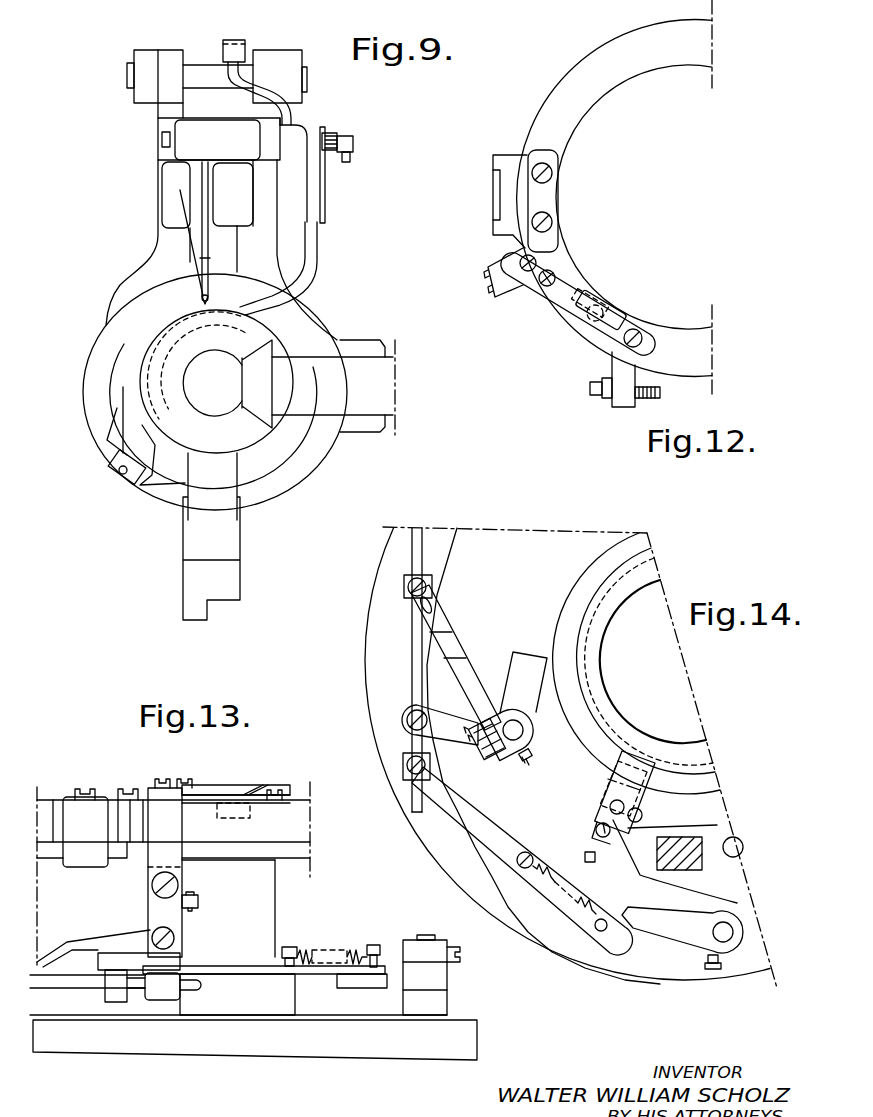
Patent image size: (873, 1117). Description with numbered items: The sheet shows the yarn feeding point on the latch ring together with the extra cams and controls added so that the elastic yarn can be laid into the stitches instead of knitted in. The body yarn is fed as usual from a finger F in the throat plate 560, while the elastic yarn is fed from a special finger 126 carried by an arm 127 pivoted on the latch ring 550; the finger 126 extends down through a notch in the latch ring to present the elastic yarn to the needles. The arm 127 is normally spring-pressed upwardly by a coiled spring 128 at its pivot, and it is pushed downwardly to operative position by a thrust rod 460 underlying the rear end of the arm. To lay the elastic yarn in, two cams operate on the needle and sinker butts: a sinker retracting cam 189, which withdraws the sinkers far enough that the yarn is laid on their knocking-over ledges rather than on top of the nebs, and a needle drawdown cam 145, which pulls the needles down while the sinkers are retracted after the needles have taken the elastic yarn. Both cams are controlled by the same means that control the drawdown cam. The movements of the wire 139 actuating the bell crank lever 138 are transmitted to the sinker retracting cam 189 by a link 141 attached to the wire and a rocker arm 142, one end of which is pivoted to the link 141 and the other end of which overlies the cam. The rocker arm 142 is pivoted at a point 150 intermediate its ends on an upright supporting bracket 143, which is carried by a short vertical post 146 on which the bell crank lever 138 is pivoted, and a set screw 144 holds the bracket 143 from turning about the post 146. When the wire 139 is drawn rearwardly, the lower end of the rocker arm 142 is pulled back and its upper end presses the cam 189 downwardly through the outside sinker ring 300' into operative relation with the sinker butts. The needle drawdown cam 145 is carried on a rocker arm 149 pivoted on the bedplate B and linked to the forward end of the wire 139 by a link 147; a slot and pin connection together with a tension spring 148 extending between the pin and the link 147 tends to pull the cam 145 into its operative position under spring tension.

In FIG. 9, the elastic yarn finger 126 is at (110, 470).
In FIG. 9, the arm 127 is at (313, 264).
In FIG. 9, the coiled spring 128 is at (325, 197).
In FIG. 14, the bell crank lever 138 is at (520, 670).
In FIG. 13, the bell crank lever 138 is at (123, 963).
In FIG. 14, the wire 139 is at (420, 643).
In FIG. 13, the wire 139 is at (83, 980).
In FIG. 14, the link 141 is at (443, 643).
In FIG. 13, the link 141 is at (78, 945).
In FIG. 12, the rocker arm 142 is at (572, 301).
In FIG. 14, the rocker arm 142 is at (487, 756).
In FIG. 13, the rocker arm 142 is at (165, 822).
In FIG. 14, the upright supporting bracket 143 is at (510, 748).
In FIG. 14, the set screw 144 is at (533, 761).
In FIG. 13, the set screw 144 is at (198, 902).
In FIG. 14, the needle drawdown cam 145 is at (640, 778).
In FIG. 14, the short vertical post 146 is at (513, 727).
In FIG. 13, the short vertical post 146 is at (173, 942).
In FIG. 14, the link 147 is at (472, 817).
In FIG. 13, the link 147 is at (223, 958).
In FIG. 14, the tension spring 148 is at (533, 877).
In FIG. 13, the tension spring 148 is at (303, 950).
In FIG. 14, the rocker arm 149 is at (682, 920).
In FIG. 13, the rocker arm 149 is at (370, 982).
In FIG. 14, the pivot point 150 is at (480, 733).
In FIG. 13, the pivot point 150 is at (168, 888).
In FIG. 12, the sinker retracting cam 189 is at (600, 308).
In FIG. 13, the sinker retracting cam 189 is at (230, 798).
In FIG. 12, the outside sinker ring 300' is at (602, 203).
In FIG. 9, the thrust rod 460 is at (247, 43).
In FIG. 9, the latch ring 550 is at (120, 298).
In FIG. 9, the throat plate 560 is at (220, 243).
In FIG. 14, the bedplate B is at (382, 672).
In FIG. 13, the bedplate B is at (207, 1043).
In FIG. 9, the yarn finger F is at (210, 198).